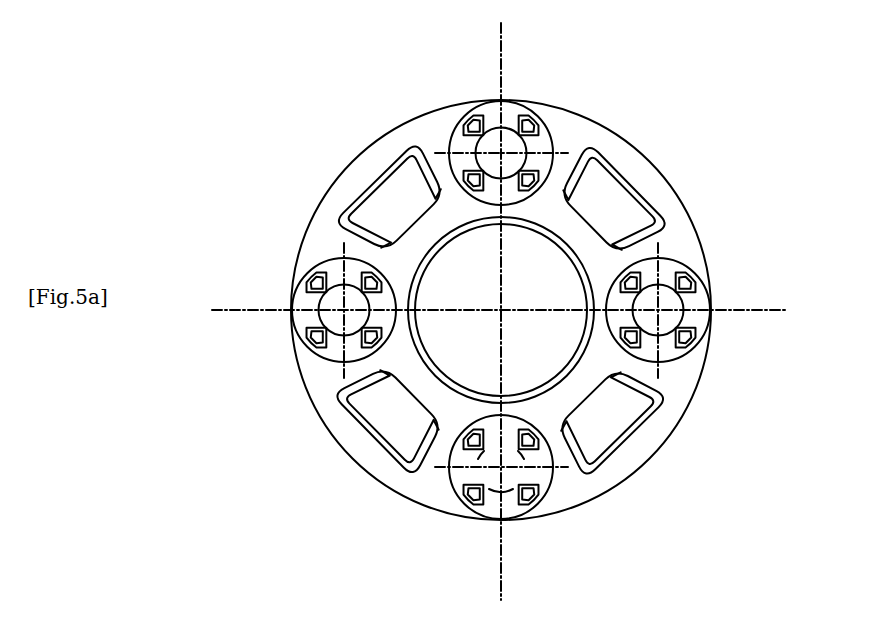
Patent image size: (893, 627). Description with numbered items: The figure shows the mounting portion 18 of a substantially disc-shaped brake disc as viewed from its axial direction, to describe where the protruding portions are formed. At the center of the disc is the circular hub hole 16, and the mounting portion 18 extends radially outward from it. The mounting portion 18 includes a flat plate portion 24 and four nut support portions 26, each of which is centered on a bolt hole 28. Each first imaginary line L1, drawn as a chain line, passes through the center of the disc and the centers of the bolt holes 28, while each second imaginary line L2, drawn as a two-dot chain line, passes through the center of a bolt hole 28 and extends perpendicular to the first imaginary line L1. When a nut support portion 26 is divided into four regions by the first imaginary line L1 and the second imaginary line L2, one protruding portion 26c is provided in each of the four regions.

The hub hole 16 is at (451, 376).
The mounting portion 18 is at (318, 160).
The flat plate portion 24 is at (373, 155).
The nut support portion 26 is at (498, 292).
The protruding portion 26c is at (466, 128).
The bolt hole 28 is at (492, 145).
The first imaginary line L1 is at (506, 28).
The second imaginary line L2 is at (562, 145).